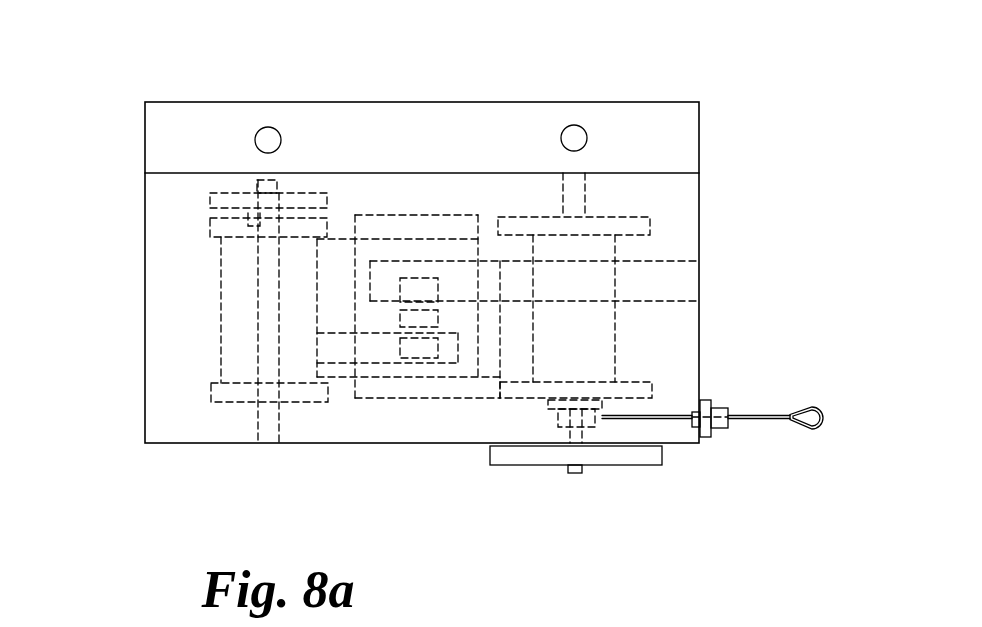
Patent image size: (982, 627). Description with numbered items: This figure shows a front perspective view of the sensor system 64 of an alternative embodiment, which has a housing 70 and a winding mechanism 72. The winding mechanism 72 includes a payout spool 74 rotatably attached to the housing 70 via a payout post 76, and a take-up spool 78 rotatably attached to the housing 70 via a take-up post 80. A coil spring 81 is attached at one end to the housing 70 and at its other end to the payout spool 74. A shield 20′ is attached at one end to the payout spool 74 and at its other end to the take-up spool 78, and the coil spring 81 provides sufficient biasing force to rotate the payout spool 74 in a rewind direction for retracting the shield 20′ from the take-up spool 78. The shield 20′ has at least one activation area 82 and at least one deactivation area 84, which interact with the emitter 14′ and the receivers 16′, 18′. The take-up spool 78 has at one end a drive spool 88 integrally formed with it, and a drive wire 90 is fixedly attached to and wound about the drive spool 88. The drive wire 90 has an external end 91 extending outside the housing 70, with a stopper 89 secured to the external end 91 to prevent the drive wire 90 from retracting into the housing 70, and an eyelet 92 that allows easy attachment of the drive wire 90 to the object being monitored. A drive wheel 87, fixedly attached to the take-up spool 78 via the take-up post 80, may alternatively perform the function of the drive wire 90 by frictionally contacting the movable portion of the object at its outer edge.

The sensor system 64 is at (157, 466).
The housing 70 is at (145, 258).
The winding mechanism 72 is at (660, 316).
The payout spool 74 is at (210, 393).
The payout post 76 is at (270, 423).
The take-up spool 78 is at (652, 222).
The take-up post 80 is at (575, 188).
The coil spring 81 is at (210, 197).
The activation area 82 is at (462, 272).
The deactivation area 84 is at (343, 275).
The drive wheel 87 is at (538, 457).
The drive spool 88 is at (550, 420).
The stopper 89 is at (723, 428).
The drive wire 90 is at (680, 423).
The external end 91 is at (745, 398).
The eyelet 92 is at (813, 407).
The emitter 14′ is at (410, 322).
The receiver 16′ is at (427, 355).
The receiver 18′ is at (435, 285).
The shield 20′ is at (379, 240).